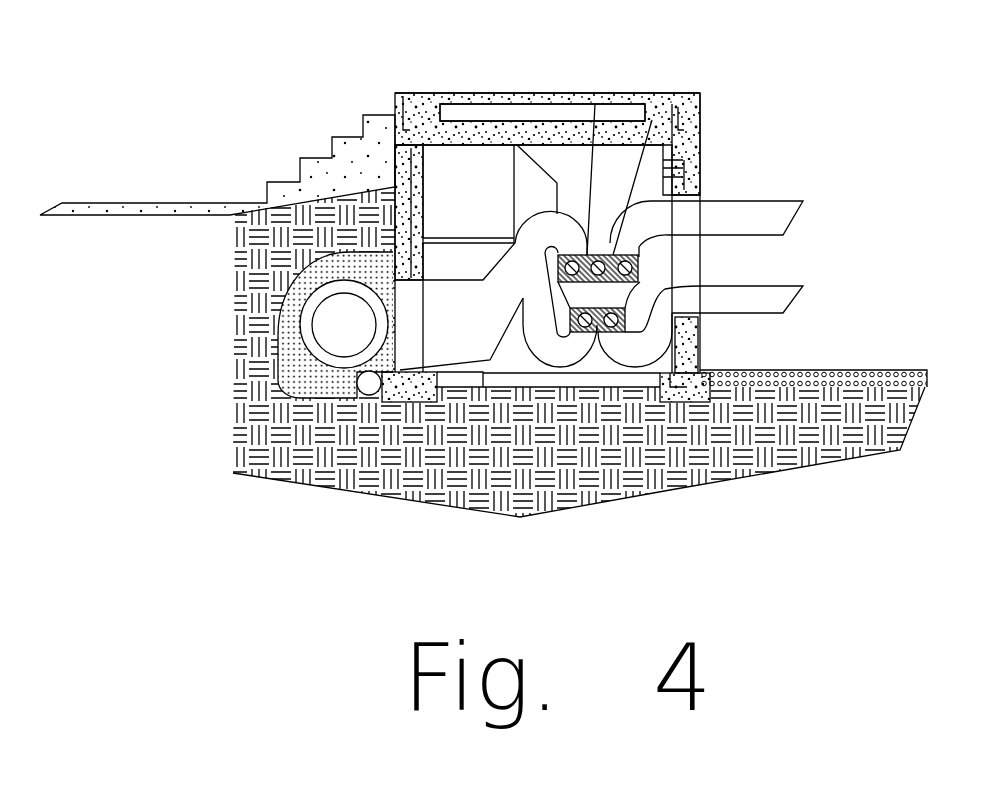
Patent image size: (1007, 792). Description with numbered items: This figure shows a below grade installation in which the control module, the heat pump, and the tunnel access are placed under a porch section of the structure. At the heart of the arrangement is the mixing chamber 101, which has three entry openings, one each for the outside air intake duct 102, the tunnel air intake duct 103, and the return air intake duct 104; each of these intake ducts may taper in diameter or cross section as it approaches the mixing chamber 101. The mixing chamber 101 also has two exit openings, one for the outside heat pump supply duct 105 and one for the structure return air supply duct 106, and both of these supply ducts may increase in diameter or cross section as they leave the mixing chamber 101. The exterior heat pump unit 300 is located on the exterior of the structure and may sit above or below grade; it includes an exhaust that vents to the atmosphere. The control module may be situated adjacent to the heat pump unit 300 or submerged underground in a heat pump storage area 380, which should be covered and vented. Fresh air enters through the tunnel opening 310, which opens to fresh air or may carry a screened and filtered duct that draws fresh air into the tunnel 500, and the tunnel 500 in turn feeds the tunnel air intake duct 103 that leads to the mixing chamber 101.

The tunnel opening 310 is at (472, 115).
The exterior heat pump unit 300 is at (497, 213).
The outside air intake duct 102 is at (602, 193).
The return air intake duct 104 is at (712, 217).
The mixing chamber 101 is at (605, 296).
The structure return air supply duct 106 is at (727, 300).
The heat pump storage area 380 is at (600, 367).
The outside heat pump supply duct 105 is at (553, 352).
The tunnel air intake duct 103 is at (485, 307).
The tunnel 500 is at (340, 327).